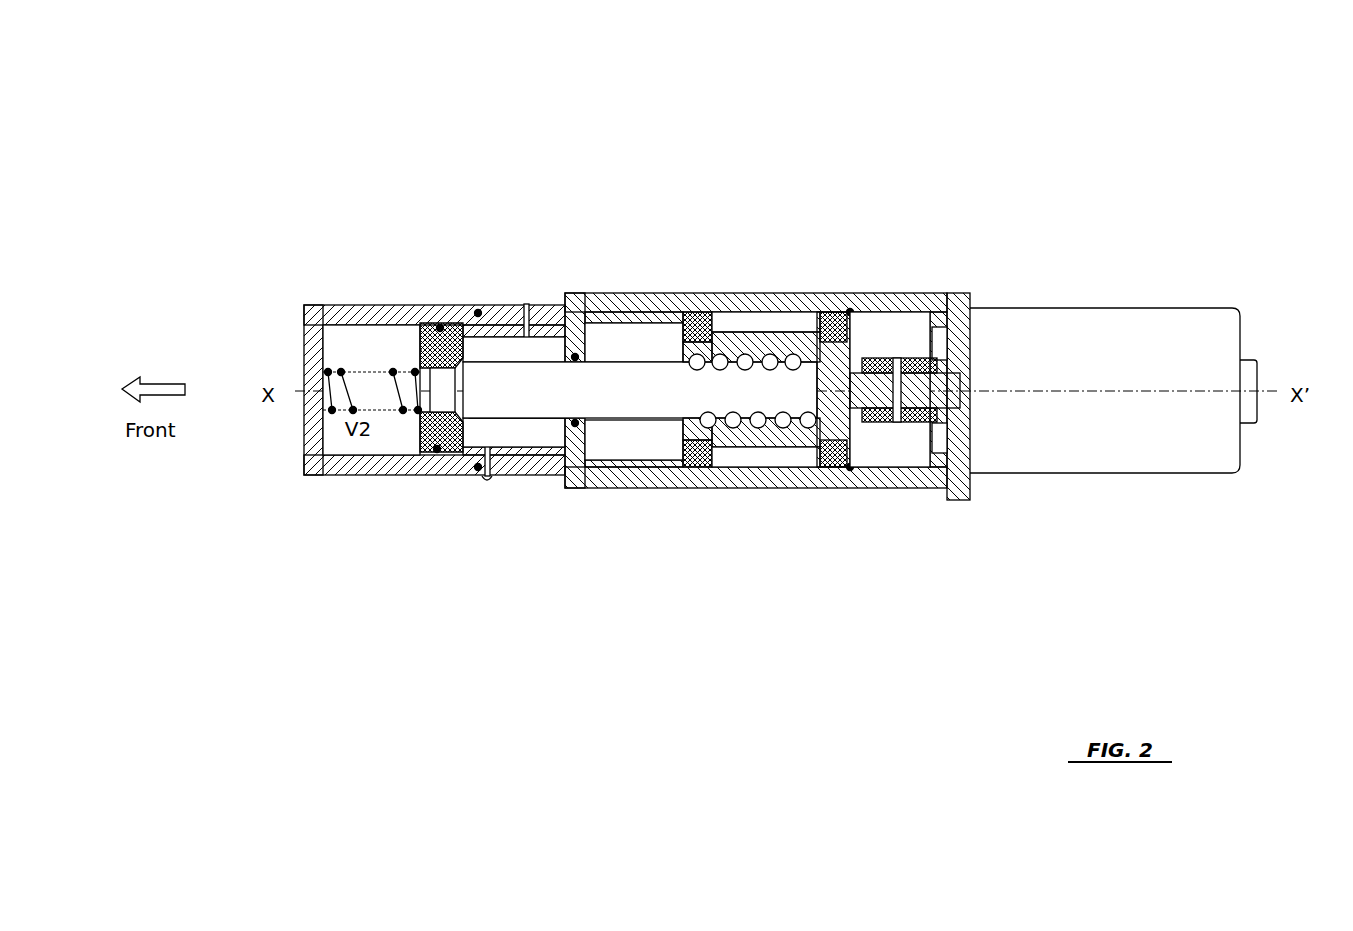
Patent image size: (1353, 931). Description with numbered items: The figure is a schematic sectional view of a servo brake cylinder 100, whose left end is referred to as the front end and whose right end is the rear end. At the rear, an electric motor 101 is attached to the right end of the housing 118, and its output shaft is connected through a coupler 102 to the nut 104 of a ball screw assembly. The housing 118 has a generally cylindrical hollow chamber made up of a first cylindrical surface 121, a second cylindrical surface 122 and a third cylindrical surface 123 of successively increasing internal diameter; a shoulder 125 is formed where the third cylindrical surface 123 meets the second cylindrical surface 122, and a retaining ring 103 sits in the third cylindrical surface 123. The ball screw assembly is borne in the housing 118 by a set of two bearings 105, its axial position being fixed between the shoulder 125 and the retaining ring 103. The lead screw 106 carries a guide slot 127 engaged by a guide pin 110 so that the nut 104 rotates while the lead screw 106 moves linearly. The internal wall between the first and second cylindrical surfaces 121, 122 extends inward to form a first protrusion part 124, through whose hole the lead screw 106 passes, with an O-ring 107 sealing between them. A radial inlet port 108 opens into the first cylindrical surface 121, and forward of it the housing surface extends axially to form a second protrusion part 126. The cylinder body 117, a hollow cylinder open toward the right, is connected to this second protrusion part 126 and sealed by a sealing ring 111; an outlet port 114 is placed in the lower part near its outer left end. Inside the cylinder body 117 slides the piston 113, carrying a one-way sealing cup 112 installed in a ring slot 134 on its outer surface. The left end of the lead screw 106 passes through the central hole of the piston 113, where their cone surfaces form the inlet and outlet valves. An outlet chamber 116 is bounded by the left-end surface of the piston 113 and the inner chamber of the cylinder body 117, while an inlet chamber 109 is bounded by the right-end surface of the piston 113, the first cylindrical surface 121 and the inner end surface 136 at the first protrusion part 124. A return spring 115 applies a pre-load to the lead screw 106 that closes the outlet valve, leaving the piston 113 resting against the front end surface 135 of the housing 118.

The servo brake cylinder 100 is at (1180, 122).
The electric motor 101 is at (1103, 471).
The coupler 102 is at (894, 426).
The retaining ring 103 is at (846, 470).
The nut 104 is at (758, 450).
The bearings 105 is at (835, 312).
The lead screw 106 is at (577, 353).
The O-ring 107 is at (633, 358).
The inlet port 108 is at (527, 304).
The inlet chamber 109 is at (520, 305).
The guide pin 110 is at (487, 480).
The sealing ring 111 is at (476, 312).
The cup 112 is at (437, 455).
The piston 113 is at (416, 450).
The outlet port 114 is at (348, 475).
The return spring 115 is at (322, 386).
The outlet chamber 116 is at (345, 338).
The cylinder body 117 is at (373, 304).
The housing 118 is at (858, 292).
The first cylindrical surface 121 is at (524, 440).
The second cylindrical surface 122 is at (658, 448).
The third cylindrical surface 123 is at (893, 463).
The first protrusion part 124 is at (633, 447).
The shoulder 125 is at (686, 462).
The second protrusion part 126 is at (466, 321).
The guide slot 127 is at (582, 450).
The ring slot 134 is at (419, 366).
The front end surface 135 is at (500, 420).
The inner end surface 136 is at (576, 352).